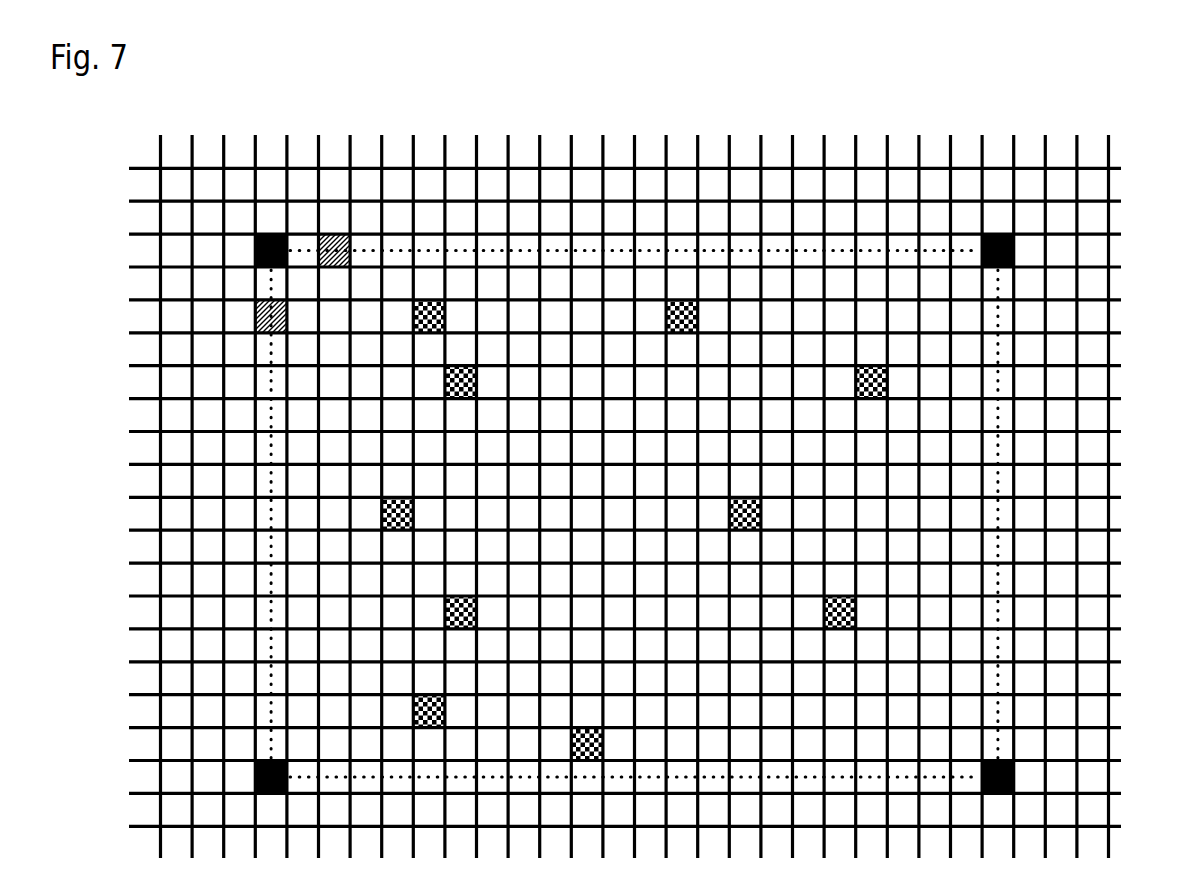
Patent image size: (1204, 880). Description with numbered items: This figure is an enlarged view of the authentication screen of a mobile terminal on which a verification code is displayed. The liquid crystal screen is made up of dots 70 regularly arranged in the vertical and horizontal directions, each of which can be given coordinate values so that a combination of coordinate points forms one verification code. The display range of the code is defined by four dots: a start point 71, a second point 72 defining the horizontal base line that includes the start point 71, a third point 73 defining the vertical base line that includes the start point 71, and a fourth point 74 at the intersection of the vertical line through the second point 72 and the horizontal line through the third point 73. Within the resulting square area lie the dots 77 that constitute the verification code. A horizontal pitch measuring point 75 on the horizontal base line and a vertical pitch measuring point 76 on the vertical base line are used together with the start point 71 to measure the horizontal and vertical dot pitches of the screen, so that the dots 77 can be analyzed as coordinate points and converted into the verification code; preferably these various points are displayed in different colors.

The dot 70 is at (743, 137).
The start point 71 is at (256, 264).
The second point 72 is at (1014, 252).
The third point 73 is at (256, 773).
The fourth point 74 is at (1015, 757).
The horizontal pitch measuring point 75 is at (350, 236).
The vertical pitch measuring point 76 is at (255, 333).
The dot constituting the verification code 77 is at (762, 500).